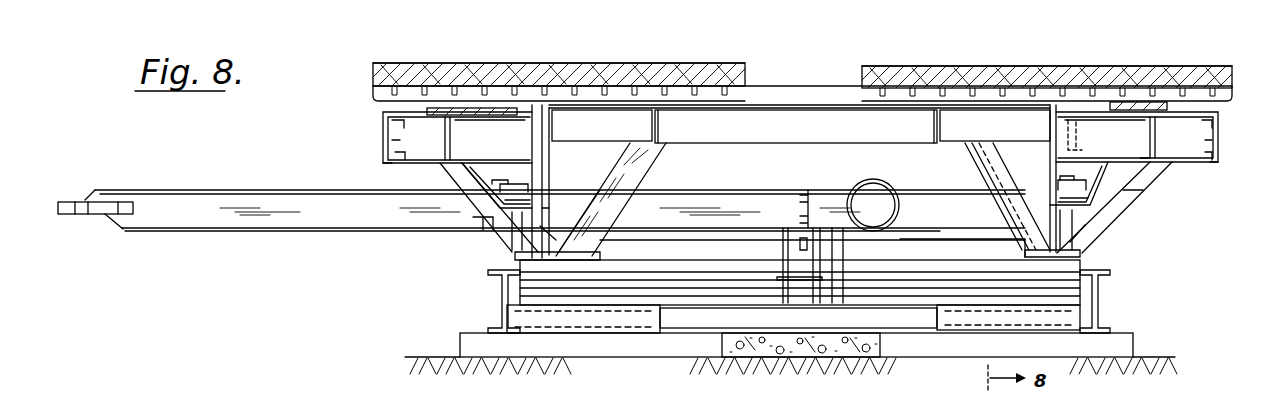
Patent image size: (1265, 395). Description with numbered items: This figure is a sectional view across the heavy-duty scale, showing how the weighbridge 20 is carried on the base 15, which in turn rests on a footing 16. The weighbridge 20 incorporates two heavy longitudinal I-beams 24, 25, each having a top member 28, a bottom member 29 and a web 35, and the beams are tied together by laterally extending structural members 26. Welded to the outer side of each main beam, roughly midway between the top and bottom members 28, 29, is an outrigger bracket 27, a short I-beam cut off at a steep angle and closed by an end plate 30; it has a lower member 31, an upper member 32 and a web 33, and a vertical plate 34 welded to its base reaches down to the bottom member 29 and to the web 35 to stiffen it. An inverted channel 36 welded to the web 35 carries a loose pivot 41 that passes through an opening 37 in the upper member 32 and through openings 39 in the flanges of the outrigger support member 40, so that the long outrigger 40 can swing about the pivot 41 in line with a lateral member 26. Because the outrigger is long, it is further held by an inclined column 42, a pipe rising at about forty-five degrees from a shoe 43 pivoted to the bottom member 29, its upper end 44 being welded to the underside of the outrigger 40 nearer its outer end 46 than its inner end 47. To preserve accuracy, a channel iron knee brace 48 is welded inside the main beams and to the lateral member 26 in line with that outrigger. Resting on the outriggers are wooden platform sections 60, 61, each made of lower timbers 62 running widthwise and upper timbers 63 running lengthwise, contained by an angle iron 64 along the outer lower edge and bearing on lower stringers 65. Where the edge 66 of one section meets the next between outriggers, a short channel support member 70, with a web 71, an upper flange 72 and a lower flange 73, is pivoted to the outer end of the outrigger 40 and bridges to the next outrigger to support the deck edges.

The base 15 is at (1100, 305).
The footing 16 is at (1130, 345).
The weighbridge 20 is at (954, 168).
The I-beam 24 is at (611, 199).
The I-beam 25 is at (1047, 167).
The laterally extending structural member 26 is at (806, 128).
The outrigger bracket 27 is at (1135, 218).
The top member 28 is at (562, 107).
The bottom member 29 is at (793, 293).
The end plate 30 is at (795, 185).
The lower member 31 is at (796, 228).
The upper member 32 is at (555, 181).
The web 33 is at (545, 197).
The vertical plate 34 is at (540, 226).
The web 35 is at (540, 186).
The inverted channel 36 is at (798, 177).
The opening 37 is at (1100, 158).
The openings 39 is at (1087, 136).
The outrigger support member 40 is at (405, 166).
The pivot 41 is at (531, 142).
The inclined column 42 is at (512, 236).
The shoe 43 is at (520, 258).
The upper end 44 is at (447, 166).
The outer end 46 is at (388, 162).
The inner end 47 is at (552, 131).
The knee brace 48 is at (645, 162).
The platform section 60 is at (550, 66).
The platform section 61 is at (1134, 61).
The lower timbers 62 is at (373, 90).
The upper timbers 63 is at (405, 67).
The angle iron 64 is at (372, 101).
The lower stringer 65 is at (1170, 122).
The edge 66 is at (987, 394).
The support member 70 is at (383, 132).
The web 71 is at (802, 142).
The upper flange 72 is at (1220, 121).
The lower flange 73 is at (408, 161).